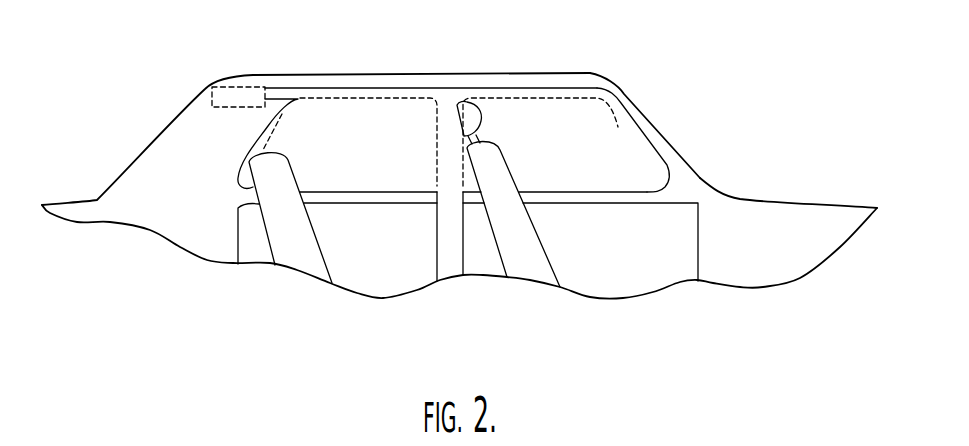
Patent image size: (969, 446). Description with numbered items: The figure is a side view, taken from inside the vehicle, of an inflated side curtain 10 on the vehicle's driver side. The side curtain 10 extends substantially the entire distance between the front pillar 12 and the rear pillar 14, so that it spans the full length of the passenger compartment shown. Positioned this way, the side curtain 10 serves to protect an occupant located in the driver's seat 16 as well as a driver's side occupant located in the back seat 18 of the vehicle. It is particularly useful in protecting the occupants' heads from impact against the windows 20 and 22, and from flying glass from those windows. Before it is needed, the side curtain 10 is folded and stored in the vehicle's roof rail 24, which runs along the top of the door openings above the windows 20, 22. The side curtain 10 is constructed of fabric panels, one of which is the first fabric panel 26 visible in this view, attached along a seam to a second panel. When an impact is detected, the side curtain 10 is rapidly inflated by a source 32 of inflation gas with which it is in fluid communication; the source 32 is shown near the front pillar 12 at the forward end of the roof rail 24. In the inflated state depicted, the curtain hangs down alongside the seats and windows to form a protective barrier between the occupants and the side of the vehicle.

The side curtain 10 is at (551, 125).
The front pillar 12 is at (665, 133).
The rear pillar 14 is at (185, 130).
The driver's seat 16 is at (525, 182).
The back seat 18 is at (295, 173).
The window 20 is at (618, 127).
The window 22 is at (408, 123).
The roof rail 24 is at (362, 82).
The first fabric panel 26 is at (510, 118).
The source of inflation gas 32 is at (245, 97).